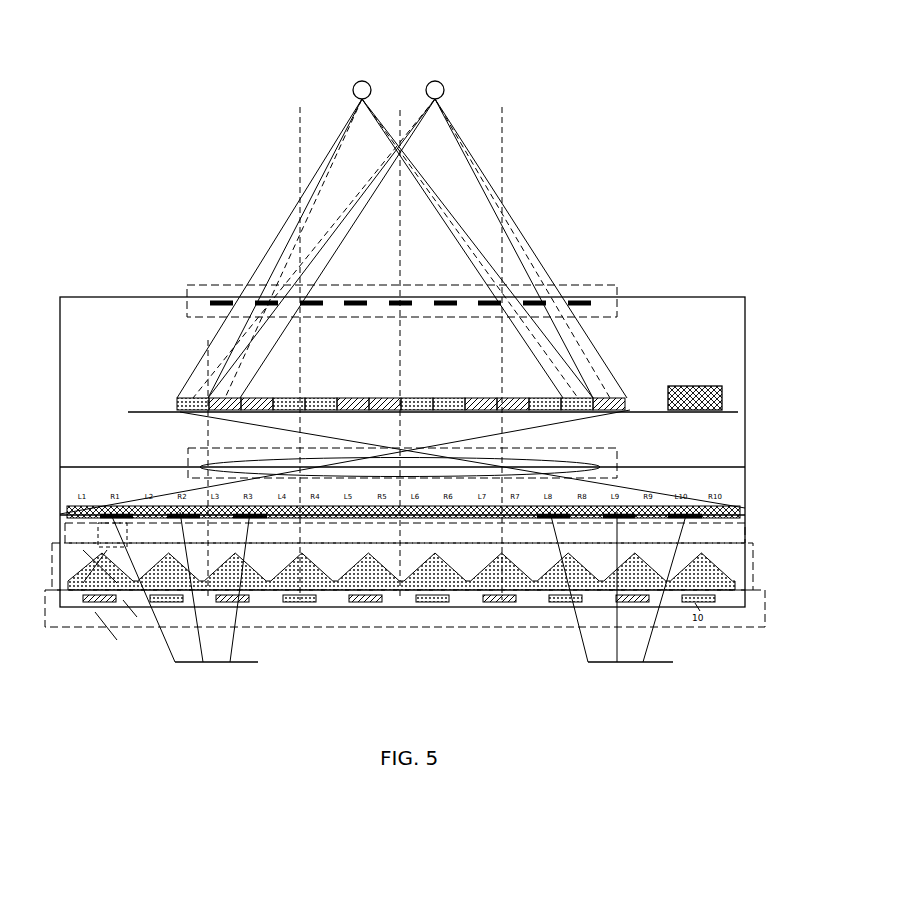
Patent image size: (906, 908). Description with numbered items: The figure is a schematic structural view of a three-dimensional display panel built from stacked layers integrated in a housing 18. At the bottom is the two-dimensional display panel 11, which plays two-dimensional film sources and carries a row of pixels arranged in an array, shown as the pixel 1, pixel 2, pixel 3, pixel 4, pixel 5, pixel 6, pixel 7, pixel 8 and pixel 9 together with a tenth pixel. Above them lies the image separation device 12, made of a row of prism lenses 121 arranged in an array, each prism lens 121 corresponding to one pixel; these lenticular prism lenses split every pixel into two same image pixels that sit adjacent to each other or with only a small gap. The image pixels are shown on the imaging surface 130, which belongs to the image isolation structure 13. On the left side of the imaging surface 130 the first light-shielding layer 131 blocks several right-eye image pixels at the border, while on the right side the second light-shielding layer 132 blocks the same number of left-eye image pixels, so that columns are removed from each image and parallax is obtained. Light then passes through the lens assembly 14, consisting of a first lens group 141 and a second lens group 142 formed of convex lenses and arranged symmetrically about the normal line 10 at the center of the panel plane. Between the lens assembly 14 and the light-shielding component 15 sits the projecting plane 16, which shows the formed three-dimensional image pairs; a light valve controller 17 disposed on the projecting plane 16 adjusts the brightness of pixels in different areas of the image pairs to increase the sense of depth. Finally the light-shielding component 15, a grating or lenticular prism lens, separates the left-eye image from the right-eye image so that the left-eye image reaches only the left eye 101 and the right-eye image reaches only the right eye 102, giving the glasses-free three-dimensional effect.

The normal line 10 is at (400, 108).
The left eye 101 is at (435, 81).
The right eye 102 is at (362, 81).
The 2D display panel 11 is at (685, 630).
The image separation device 12 is at (755, 555).
The prism lens 121 is at (262, 605).
The image isolation structure 13 is at (730, 523).
The imaging surface 130 is at (433, 556).
The first light-shielding layer 131 is at (184, 597).
The second light-shielding layer 132 is at (618, 597).
The lens assembly 14 is at (620, 463).
The first lens group 141 is at (222, 455).
The second lens group 142 is at (590, 458).
The light-shielding component 15 is at (600, 284).
The projecting plane 16 is at (140, 410).
The light valve controller 17 is at (680, 386).
The housing 18 is at (697, 297).
The pixel 1 is at (96, 603).
The pixel 2 is at (163, 603).
The pixel 3 is at (229, 603).
The pixel 4 is at (296, 603).
The pixel 5 is at (362, 603).
The pixel 6 is at (429, 603).
The pixel 7 is at (496, 603).
The pixel 8 is at (562, 603).
The pixel 9 is at (629, 603).